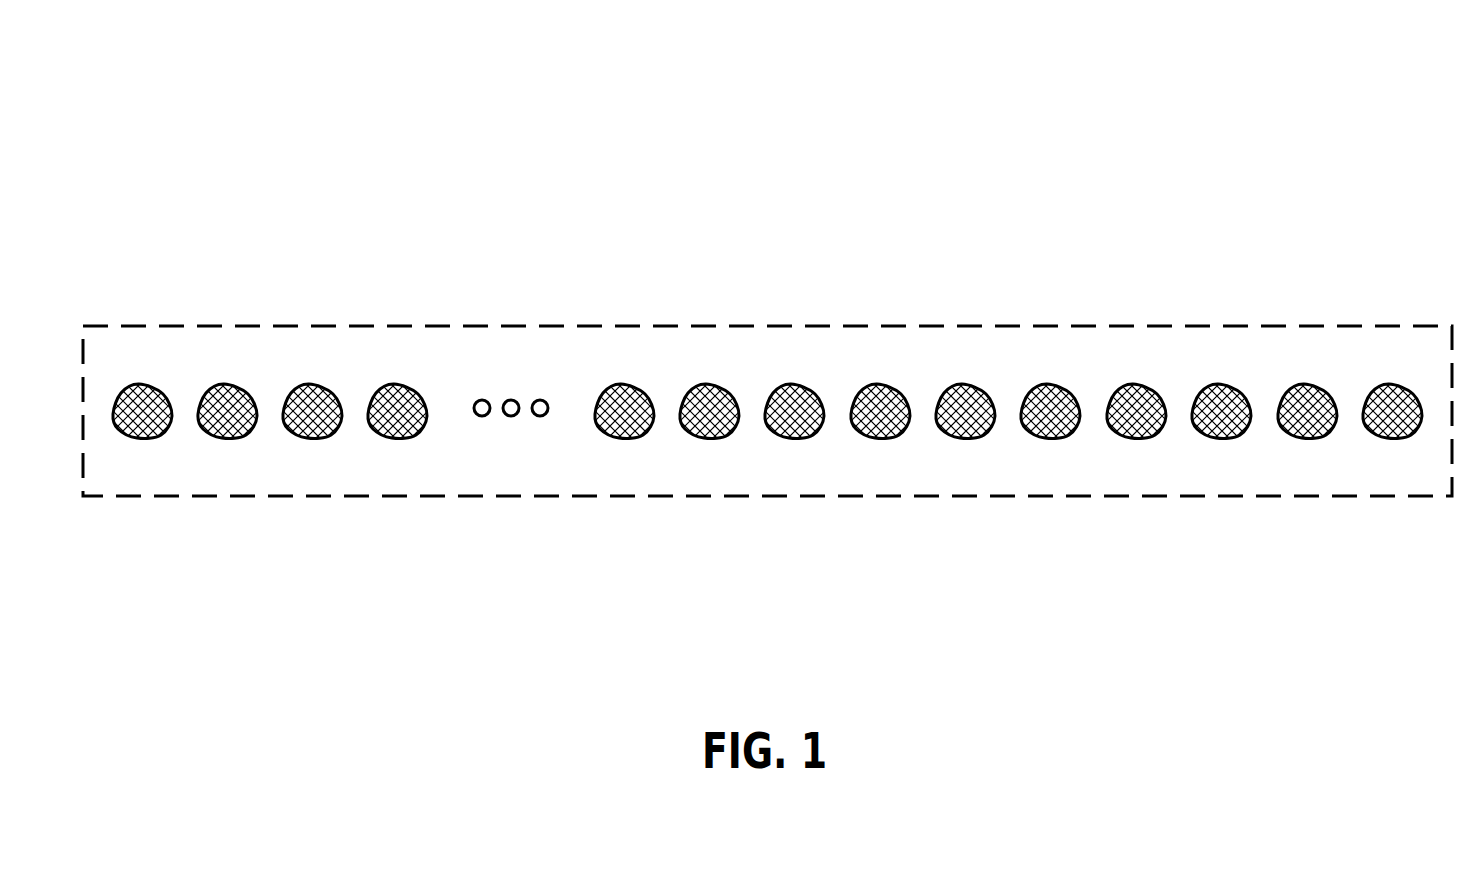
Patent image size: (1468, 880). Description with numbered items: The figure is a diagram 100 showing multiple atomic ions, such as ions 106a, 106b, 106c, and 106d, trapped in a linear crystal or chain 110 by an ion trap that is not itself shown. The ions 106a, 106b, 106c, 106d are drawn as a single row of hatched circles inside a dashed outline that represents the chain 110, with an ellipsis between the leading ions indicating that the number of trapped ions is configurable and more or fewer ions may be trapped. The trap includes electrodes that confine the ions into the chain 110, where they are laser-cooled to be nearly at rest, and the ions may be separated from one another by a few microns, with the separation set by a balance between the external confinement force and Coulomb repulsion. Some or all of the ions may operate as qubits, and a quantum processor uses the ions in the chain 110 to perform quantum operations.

The diagram 100 is at (255, 82).
The linear crystal or chain 110 is at (828, 327).
The ion 106a is at (168, 397).
The ion 106b is at (250, 397).
The ion 106c is at (1330, 393).
The ion 106d is at (1413, 393).